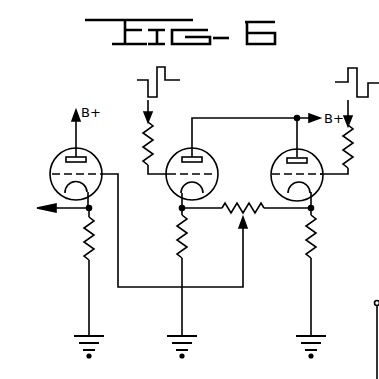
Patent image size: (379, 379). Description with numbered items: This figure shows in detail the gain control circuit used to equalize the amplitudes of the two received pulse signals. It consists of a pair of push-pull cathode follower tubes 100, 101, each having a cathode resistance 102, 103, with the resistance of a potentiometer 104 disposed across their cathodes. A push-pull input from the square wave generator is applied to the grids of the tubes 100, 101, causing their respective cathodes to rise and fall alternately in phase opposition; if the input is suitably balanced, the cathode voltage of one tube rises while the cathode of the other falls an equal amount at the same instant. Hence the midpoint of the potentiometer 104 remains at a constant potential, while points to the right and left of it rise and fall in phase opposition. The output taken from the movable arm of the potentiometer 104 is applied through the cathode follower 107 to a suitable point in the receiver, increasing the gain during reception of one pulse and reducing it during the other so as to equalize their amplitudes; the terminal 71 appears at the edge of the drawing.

The push-pull cathode follower tube 100 is at (215, 181).
The push-pull cathode follower tube 101 is at (320, 186).
The cathode resistance 102 is at (185, 243).
The cathode resistance 103 is at (315, 240).
The potentiometer 104 is at (250, 212).
The cathode follower 107 is at (95, 151).
The output terminal 71 is at (374, 304).